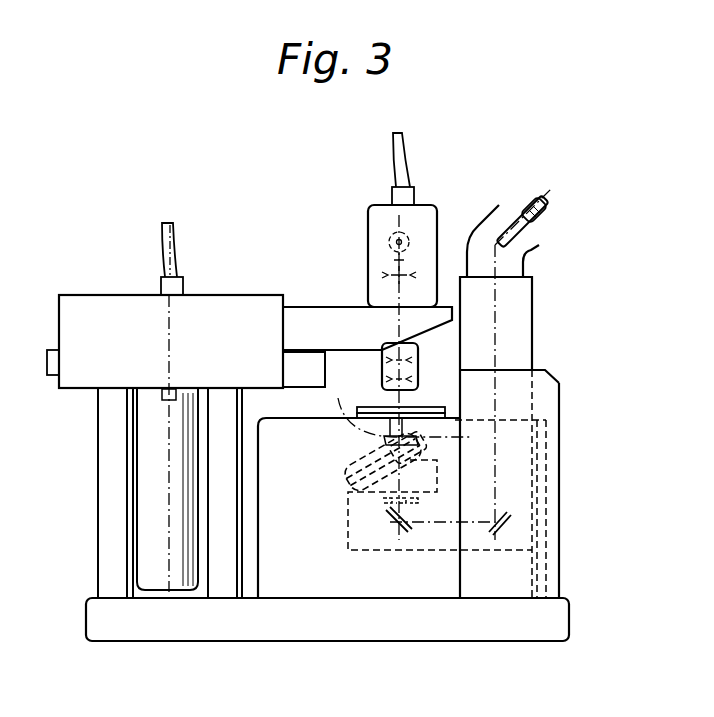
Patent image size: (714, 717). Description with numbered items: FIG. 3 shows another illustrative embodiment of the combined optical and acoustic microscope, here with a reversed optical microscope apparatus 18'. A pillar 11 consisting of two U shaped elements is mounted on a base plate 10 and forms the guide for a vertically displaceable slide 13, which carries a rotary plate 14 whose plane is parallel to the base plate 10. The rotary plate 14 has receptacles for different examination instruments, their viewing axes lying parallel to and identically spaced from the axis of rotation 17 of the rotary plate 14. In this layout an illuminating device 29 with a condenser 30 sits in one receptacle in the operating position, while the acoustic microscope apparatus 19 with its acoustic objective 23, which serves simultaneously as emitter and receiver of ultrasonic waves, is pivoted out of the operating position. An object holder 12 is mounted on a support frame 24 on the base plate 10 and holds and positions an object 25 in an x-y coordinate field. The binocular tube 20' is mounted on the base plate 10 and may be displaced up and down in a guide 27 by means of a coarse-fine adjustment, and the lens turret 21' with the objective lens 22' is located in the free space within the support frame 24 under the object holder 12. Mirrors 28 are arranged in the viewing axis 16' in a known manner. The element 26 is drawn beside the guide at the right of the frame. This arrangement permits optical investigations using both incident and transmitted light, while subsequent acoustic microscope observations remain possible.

The base plate 10 is at (222, 620).
The pillar 11 is at (120, 488).
The object holder 12 is at (440, 406).
The slide 13 is at (158, 516).
The rotary plate 14 is at (297, 370).
The viewing axis 16' is at (402, 401).
The axis of rotation 17 is at (162, 460).
The optical microscope apparatus 18' is at (559, 437).
The acoustic microscope apparatus 19 is at (102, 317).
The binocular tube 20' is at (558, 236).
The lens turret 21' is at (523, 462).
The objective lens 22' is at (500, 461).
The acoustic objective 23 is at (163, 400).
The support frame 24 is at (328, 576).
The object 25 is at (410, 405).
The side housing 26 is at (507, 578).
The guide 27 is at (530, 502).
The mirrors 28 is at (405, 535).
The illuminating device 29 is at (380, 242).
The condenser 30 is at (418, 364).